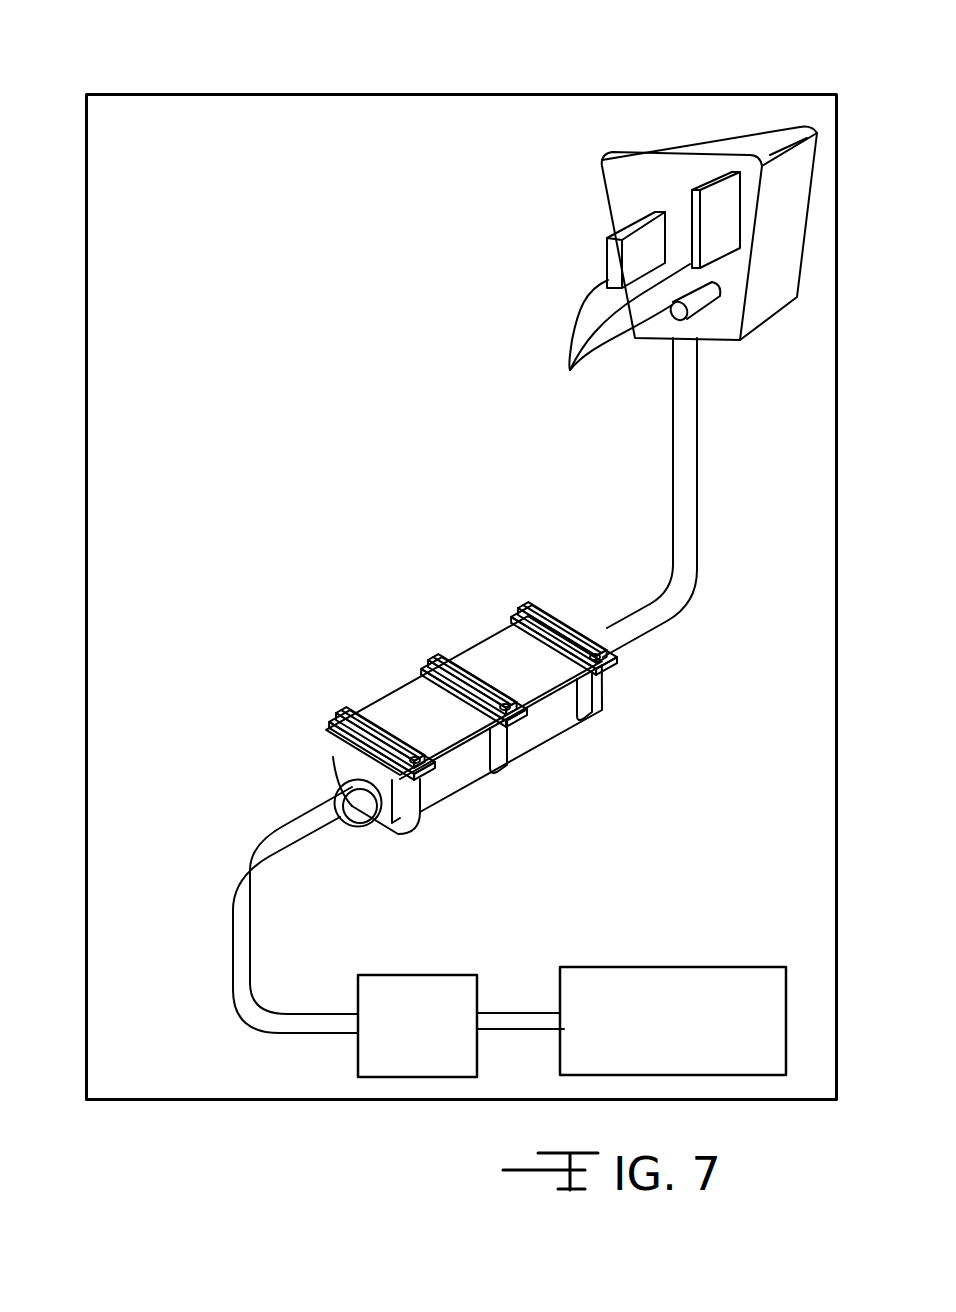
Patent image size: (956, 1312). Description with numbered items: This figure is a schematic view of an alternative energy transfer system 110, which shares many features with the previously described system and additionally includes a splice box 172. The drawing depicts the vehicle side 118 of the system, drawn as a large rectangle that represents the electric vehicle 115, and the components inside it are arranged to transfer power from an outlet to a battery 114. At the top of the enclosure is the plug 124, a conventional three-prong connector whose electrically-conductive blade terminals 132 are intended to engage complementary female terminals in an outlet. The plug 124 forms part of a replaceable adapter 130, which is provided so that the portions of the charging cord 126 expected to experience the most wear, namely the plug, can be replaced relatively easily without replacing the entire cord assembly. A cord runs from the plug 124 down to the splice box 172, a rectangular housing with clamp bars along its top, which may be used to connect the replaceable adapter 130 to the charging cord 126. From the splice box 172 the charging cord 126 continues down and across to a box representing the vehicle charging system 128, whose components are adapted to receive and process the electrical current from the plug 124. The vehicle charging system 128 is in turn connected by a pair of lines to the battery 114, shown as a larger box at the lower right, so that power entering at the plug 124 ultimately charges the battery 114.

The alternative energy transfer system 110 is at (294, 84).
The vehicle side 118 is at (414, 84).
The plug 124 is at (680, 147).
The replaceable adapter 130 is at (497, 287).
The terminals 132 is at (620, 332).
The splice box 172 is at (392, 645).
The vehicle charging system 128 is at (398, 975).
The battery 114 is at (628, 967).
The electric vehicle 115 is at (323, 1102).
The charging cord 126 is at (84, 975).